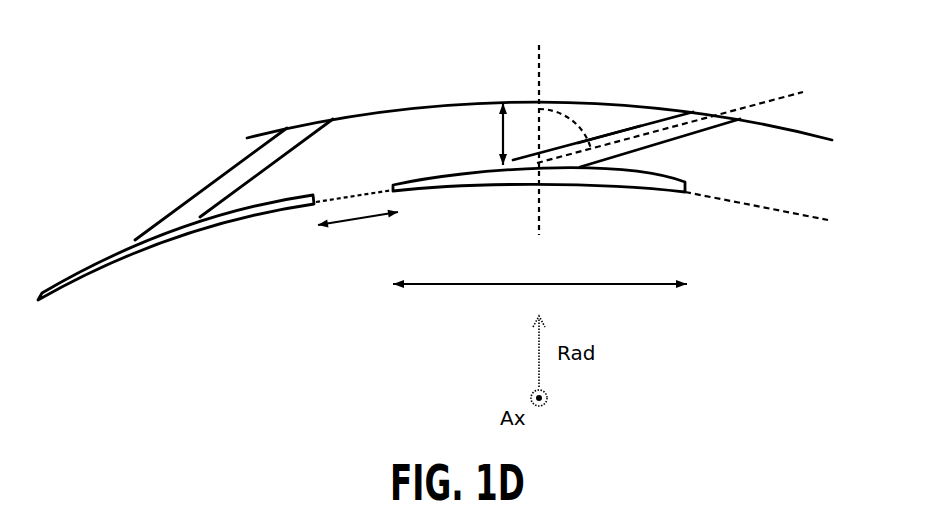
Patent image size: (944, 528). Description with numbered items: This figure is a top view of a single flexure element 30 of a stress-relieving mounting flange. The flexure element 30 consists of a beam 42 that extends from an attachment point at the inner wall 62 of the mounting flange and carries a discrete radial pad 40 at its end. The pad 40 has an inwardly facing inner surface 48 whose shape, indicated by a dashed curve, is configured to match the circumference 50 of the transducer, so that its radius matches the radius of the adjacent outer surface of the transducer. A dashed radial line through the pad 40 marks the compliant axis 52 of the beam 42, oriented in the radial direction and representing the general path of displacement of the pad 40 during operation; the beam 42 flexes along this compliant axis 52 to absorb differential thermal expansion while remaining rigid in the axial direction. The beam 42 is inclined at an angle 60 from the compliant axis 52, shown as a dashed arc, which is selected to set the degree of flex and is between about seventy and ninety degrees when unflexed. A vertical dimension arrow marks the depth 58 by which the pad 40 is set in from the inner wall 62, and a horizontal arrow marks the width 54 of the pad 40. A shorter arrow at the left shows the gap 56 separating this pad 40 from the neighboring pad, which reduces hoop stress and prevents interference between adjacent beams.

The flexure element 30 is at (688, 240).
The pad 40 is at (430, 183).
The beam 42 is at (632, 130).
The inner surface 48 is at (577, 187).
The circumference 50 is at (755, 203).
The compliant axis 52 is at (540, 85).
The width 54 is at (613, 287).
The gap 56 is at (353, 217).
The depth 58 is at (500, 140).
The angle 60 is at (578, 140).
The inner wall 62 is at (793, 125).